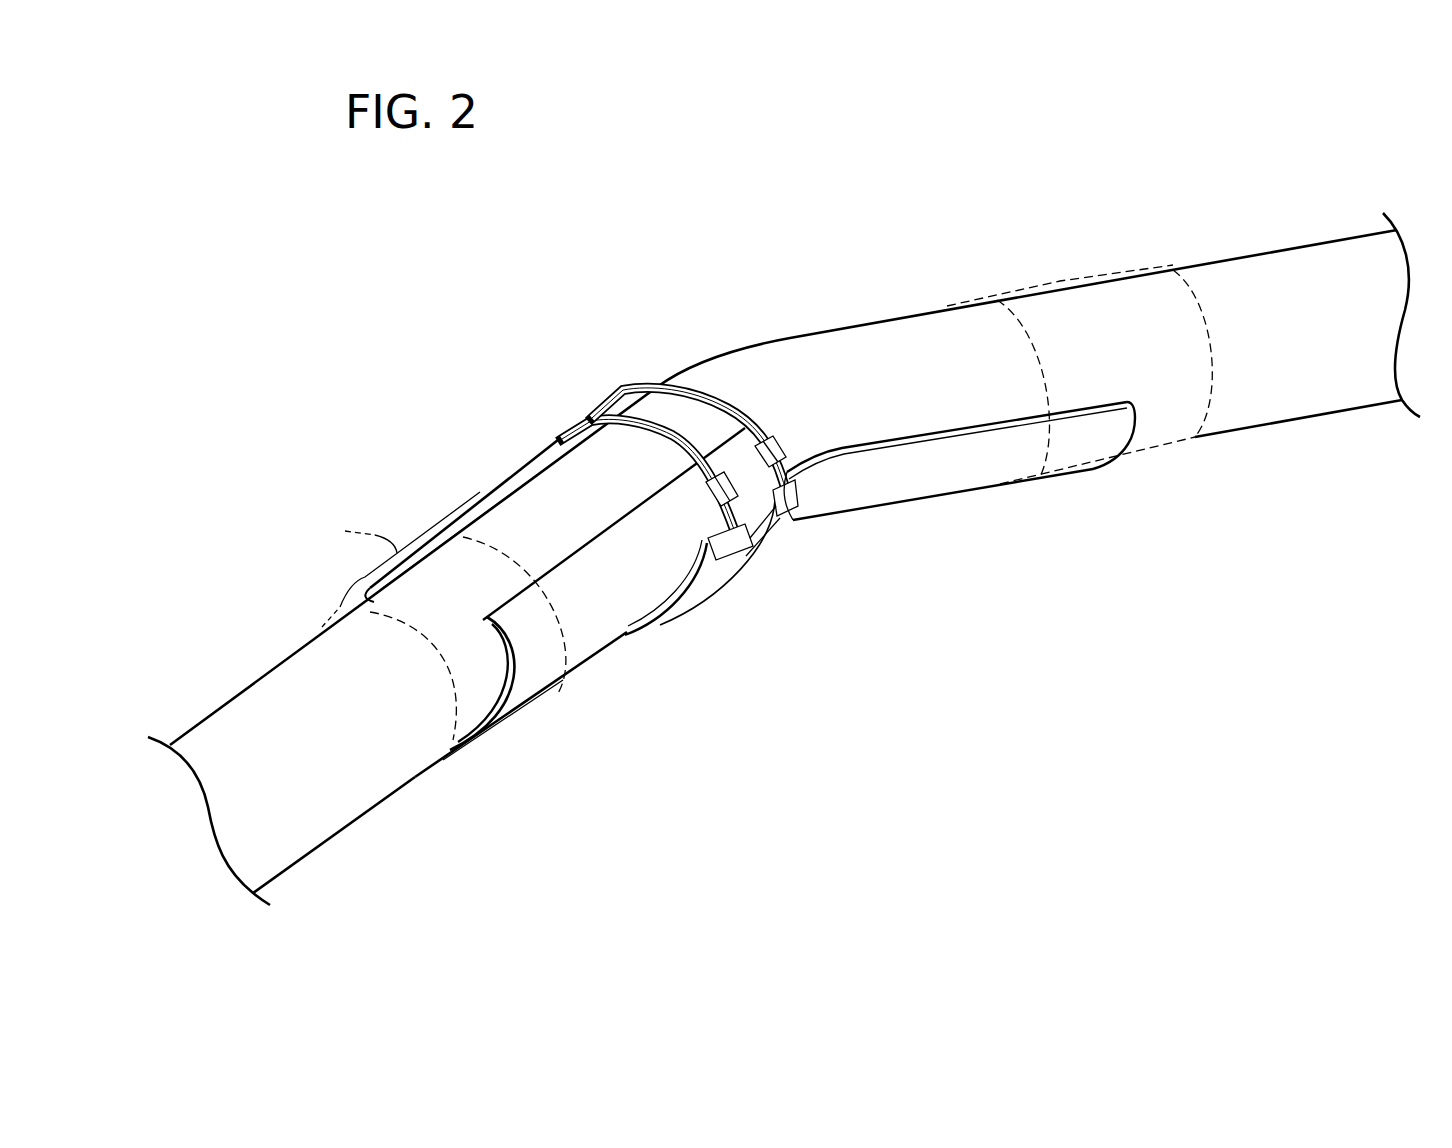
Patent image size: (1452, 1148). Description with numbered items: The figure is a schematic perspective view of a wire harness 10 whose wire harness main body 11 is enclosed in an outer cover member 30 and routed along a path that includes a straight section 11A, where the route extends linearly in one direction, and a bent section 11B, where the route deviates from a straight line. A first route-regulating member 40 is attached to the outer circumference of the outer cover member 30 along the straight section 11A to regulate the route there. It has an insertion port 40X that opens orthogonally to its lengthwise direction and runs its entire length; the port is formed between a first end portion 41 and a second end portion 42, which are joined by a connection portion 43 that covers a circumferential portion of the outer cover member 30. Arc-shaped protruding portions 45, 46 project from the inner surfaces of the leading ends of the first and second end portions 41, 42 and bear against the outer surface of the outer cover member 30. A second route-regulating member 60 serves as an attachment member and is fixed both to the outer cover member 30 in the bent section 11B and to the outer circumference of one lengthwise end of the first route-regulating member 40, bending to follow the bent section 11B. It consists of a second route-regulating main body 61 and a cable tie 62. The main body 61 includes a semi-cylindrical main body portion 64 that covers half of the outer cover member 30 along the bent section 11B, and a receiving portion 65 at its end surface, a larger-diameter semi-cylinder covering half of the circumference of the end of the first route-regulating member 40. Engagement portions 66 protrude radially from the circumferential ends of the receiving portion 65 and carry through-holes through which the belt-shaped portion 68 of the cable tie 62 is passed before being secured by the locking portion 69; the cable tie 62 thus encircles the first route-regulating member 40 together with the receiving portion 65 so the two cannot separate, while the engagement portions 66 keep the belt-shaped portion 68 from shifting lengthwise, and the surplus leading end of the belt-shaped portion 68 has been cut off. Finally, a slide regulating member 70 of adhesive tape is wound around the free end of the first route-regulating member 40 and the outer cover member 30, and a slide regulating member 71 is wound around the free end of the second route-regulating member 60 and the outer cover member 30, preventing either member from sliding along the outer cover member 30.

The wire harness 10 is at (784, 504).
The wire harness main body 11 is at (784, 559).
The straight section 11A is at (512, 512).
The bent section 11B is at (857, 343).
The outer cover member 30 is at (268, 668).
The first route-regulating member 40 is at (532, 602).
The insertion port 40X is at (577, 545).
The first end portion 41 is at (426, 557).
The second end portion 42 is at (468, 643).
The connection portion 43 is at (575, 660).
The protruding portion 45 is at (374, 608).
The protruding portion 46 is at (455, 640).
The second route-regulating member 60 is at (959, 480).
The second route-regulating main body 61 is at (892, 510).
The cable tie 62 is at (699, 482).
The main body portion 64 is at (925, 455).
The receiving portion 65 is at (760, 568).
The engagement portion 66 is at (790, 525).
The belt-shaped portion 68 is at (710, 398).
The locking portion 69 is at (787, 447).
The slide regulating member 70 is at (345, 531).
The slide regulating member 71 is at (1117, 275).